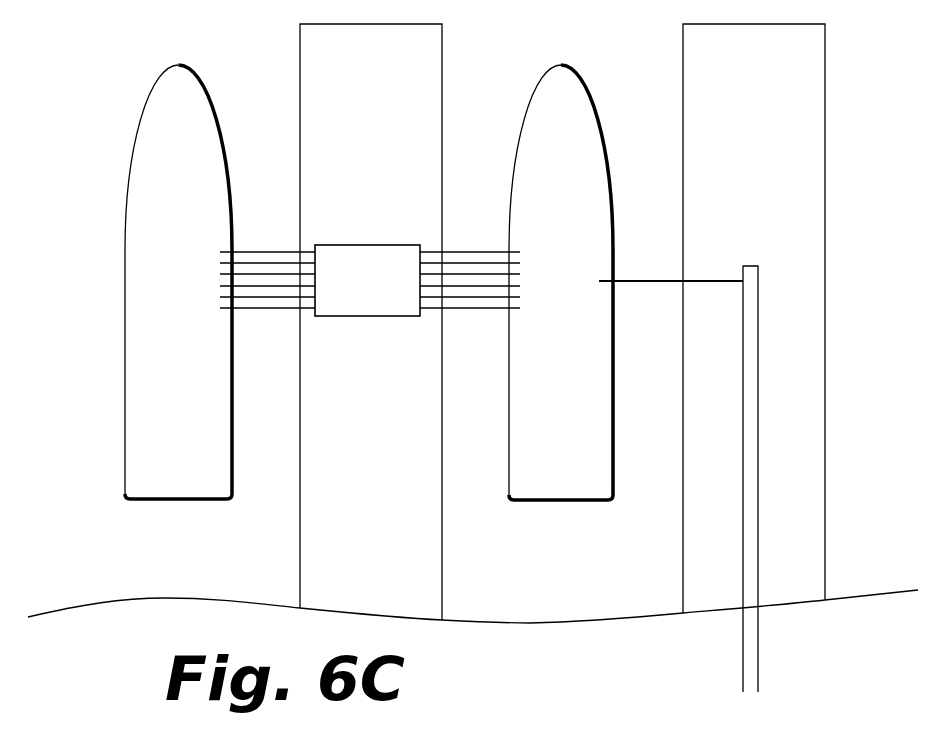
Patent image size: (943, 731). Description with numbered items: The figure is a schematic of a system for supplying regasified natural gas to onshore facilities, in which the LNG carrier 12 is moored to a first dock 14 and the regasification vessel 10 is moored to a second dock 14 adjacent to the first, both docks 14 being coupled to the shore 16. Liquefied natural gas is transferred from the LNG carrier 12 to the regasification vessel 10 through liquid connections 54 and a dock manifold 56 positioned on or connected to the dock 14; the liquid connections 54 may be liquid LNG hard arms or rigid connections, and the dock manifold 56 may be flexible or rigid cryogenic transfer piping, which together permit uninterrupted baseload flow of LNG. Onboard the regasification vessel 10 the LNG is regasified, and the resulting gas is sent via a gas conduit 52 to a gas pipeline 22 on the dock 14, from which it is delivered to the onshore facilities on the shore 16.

The regasification vessel 10 is at (552, 348).
The LNG carrier 12 is at (165, 348).
The dock 14 is at (358, 183).
The shore 16 is at (529, 658).
The gas pipeline 22 is at (758, 442).
The gas conduit 52 is at (634, 281).
The liquid connections 54 is at (256, 250).
The dock manifold 56 is at (354, 291).